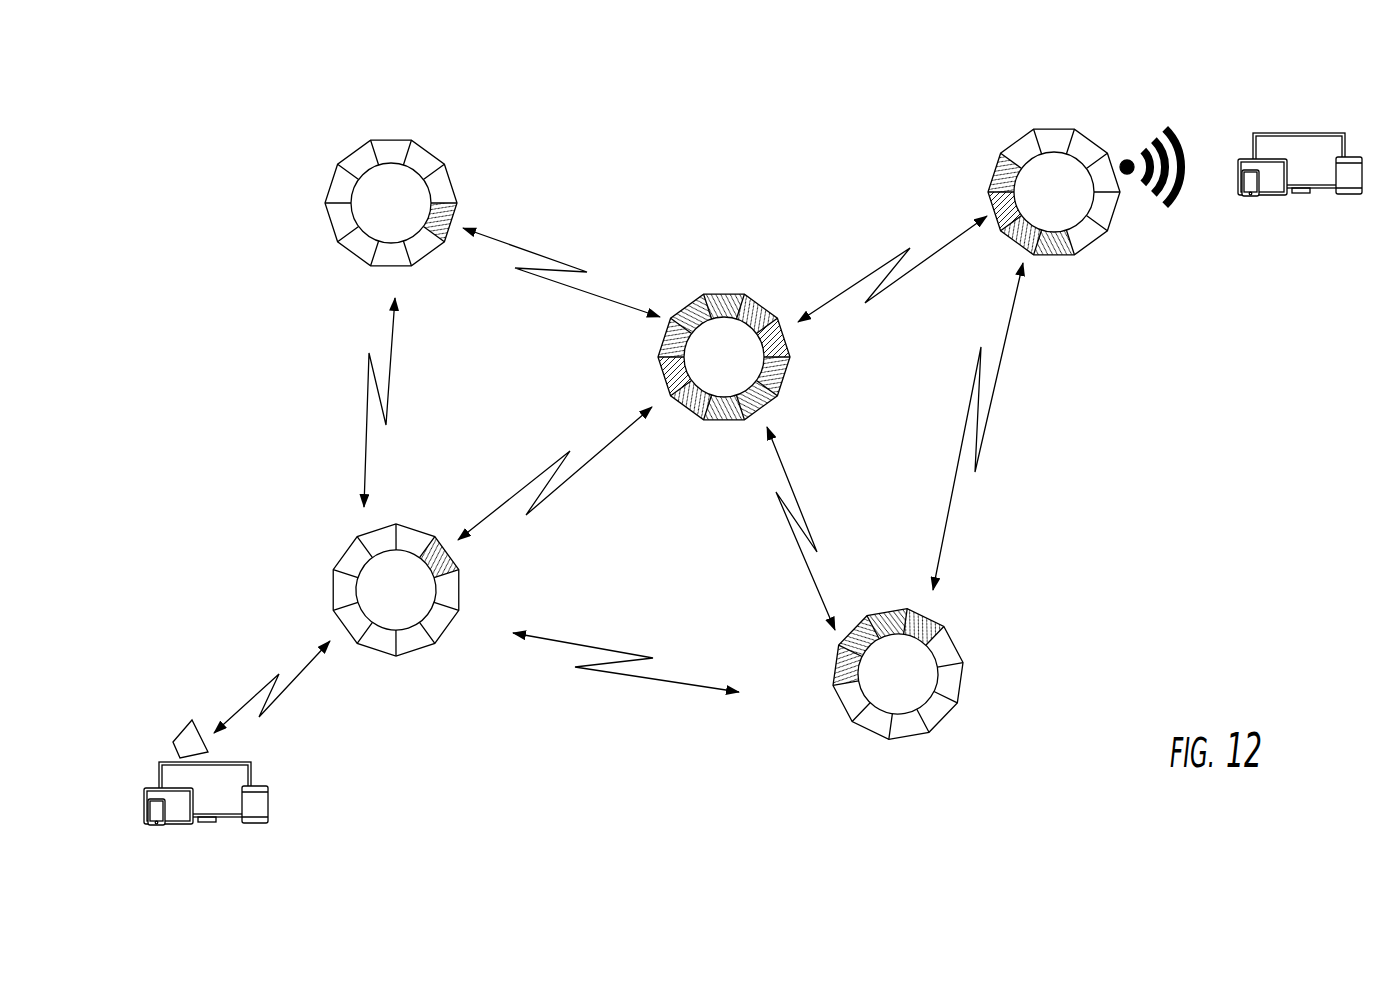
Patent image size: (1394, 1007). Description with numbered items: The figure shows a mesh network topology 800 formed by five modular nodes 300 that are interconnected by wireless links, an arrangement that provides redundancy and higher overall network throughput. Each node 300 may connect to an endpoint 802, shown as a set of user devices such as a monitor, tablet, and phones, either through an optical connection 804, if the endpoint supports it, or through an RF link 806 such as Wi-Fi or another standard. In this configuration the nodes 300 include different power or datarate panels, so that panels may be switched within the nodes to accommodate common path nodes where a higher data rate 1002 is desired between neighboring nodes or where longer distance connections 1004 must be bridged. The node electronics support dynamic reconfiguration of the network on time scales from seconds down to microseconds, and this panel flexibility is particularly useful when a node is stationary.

The node 300 is at (451, 181).
The mesh network topology 800 is at (664, 117).
The endpoint 802 is at (1298, 111).
The optical connection 804 is at (178, 717).
The RF link 806 is at (1186, 101).
The higher data rate connection 1002 is at (547, 309).
The longer distance connection 1004 is at (1013, 428).